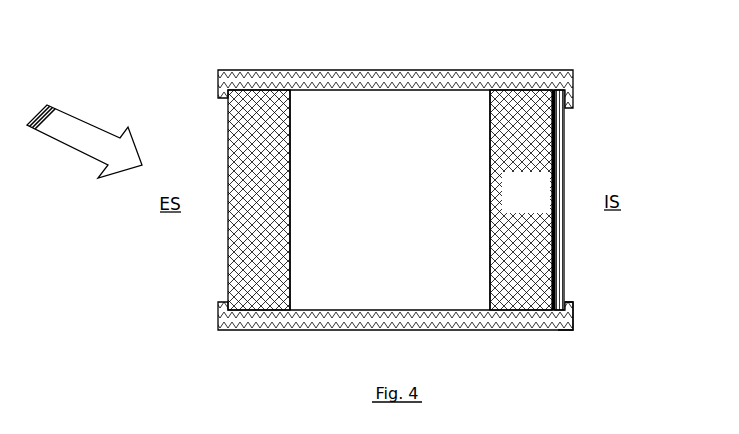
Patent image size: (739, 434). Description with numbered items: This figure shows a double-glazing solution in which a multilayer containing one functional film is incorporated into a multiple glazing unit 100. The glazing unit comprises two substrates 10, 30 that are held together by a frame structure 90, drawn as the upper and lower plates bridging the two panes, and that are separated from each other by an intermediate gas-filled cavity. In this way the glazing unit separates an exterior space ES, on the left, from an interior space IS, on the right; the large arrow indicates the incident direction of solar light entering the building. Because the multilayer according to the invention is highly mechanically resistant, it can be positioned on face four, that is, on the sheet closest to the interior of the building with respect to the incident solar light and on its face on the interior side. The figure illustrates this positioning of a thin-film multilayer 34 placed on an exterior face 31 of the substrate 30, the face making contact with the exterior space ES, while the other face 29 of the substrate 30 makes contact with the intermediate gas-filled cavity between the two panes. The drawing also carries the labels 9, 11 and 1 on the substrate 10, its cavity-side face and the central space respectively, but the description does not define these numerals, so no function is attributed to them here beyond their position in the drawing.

The multiple glazing unit 100 is at (138, 85).
The frame structure 90 is at (288, 86).
The substrate 10 is at (248, 277).
The thin-film multilayer 34 is at (562, 312).
The outer insulating wall 9 is at (227, 293).
The inner face of outer wall 11 is at (291, 265).
The cavity 1 is at (387, 208).
The substrate 30 is at (508, 205).
The other face of the substrate 29 is at (498, 285).
The exterior face of the substrate 31 is at (554, 258).